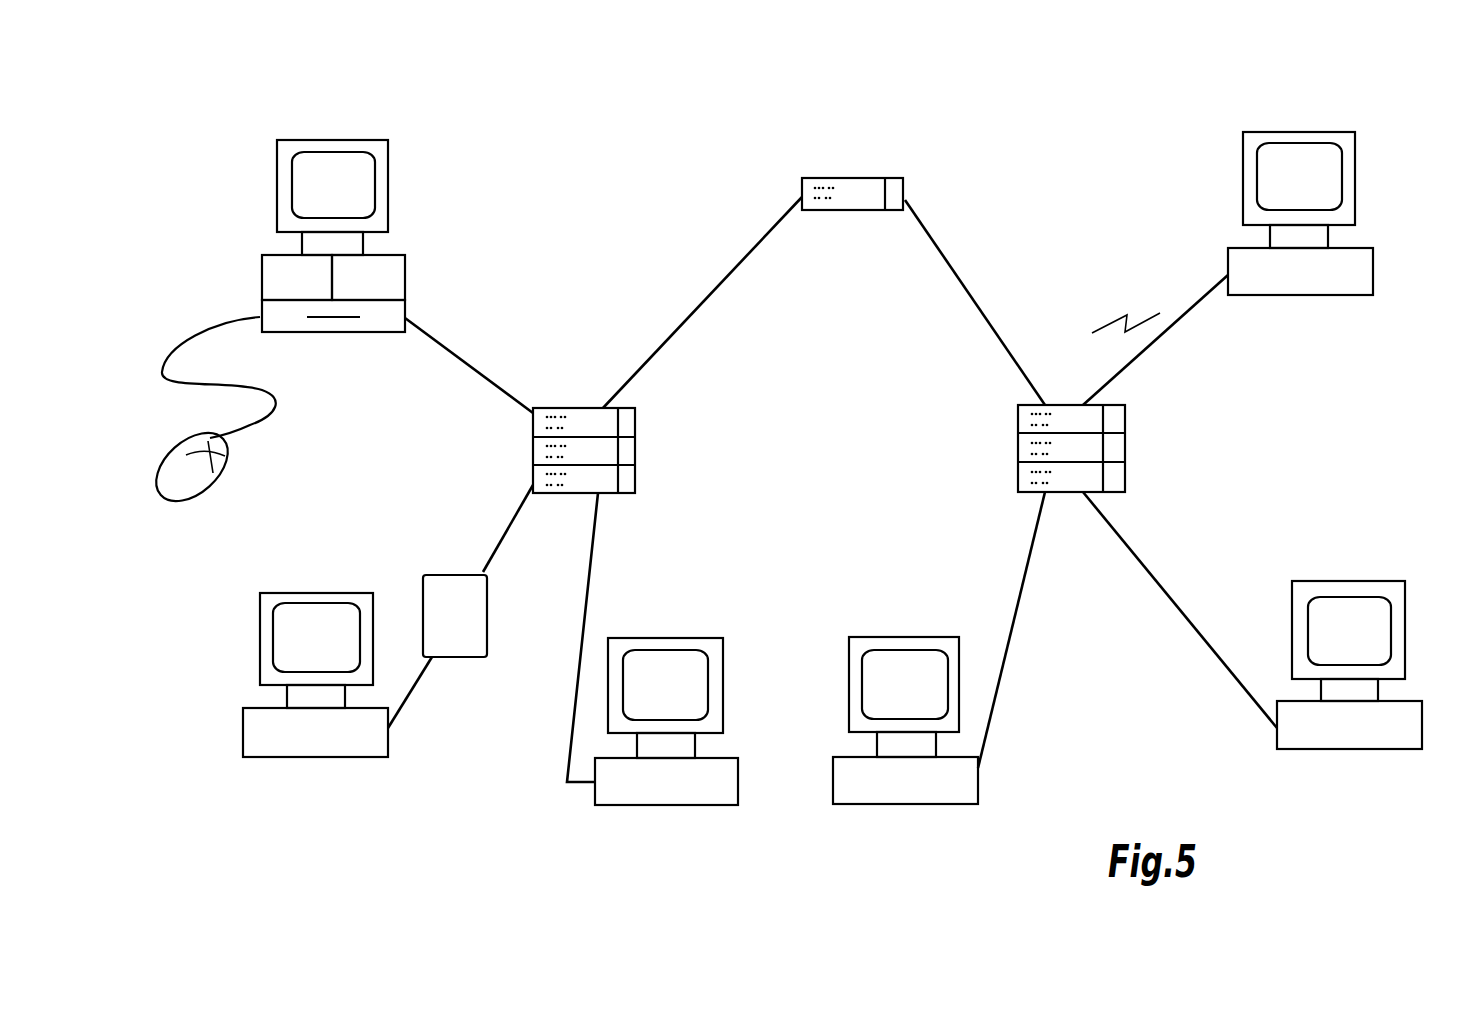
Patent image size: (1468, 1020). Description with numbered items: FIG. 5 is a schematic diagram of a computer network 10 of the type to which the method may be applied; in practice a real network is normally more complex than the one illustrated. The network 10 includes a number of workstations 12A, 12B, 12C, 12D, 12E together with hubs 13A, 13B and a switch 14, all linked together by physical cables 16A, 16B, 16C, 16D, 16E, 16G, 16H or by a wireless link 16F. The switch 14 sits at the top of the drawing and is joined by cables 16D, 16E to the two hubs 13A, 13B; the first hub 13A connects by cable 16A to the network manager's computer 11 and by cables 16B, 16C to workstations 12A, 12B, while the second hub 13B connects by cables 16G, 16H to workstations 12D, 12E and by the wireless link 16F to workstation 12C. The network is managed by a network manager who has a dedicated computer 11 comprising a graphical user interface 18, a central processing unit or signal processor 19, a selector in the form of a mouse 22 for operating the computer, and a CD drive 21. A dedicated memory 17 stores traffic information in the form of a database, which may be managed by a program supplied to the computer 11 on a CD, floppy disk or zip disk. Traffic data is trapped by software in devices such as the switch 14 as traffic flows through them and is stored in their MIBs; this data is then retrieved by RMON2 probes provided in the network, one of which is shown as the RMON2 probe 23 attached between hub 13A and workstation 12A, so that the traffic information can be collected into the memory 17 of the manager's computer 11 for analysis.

The network system 10 is at (1061, 145).
The computer 11 is at (367, 259).
The workstation 12A is at (350, 781).
The workstation 12B is at (698, 828).
The workstation 12C is at (1343, 326).
The workstation 12D is at (936, 826).
The workstation 12E is at (1389, 779).
The hub 13A is at (685, 445).
The hub 13B is at (1165, 447).
The switch 14 is at (868, 178).
The physical cable 16A is at (472, 368).
The physical cable 16B is at (485, 557).
The physical cable 16C is at (593, 553).
The physical cable 16D is at (697, 300).
The physical cable 16E is at (972, 292).
The wireless link 16F is at (1162, 333).
The physical cable 16G is at (1018, 597).
The physical cable 16H is at (1155, 570).
The memory 17 is at (387, 275).
The graphical user interface 18 is at (378, 161).
The central processing unit 19 is at (278, 280).
The CD drive 21 is at (383, 319).
The mouse 22 is at (197, 480).
The RMON2 probe 23 is at (466, 631).